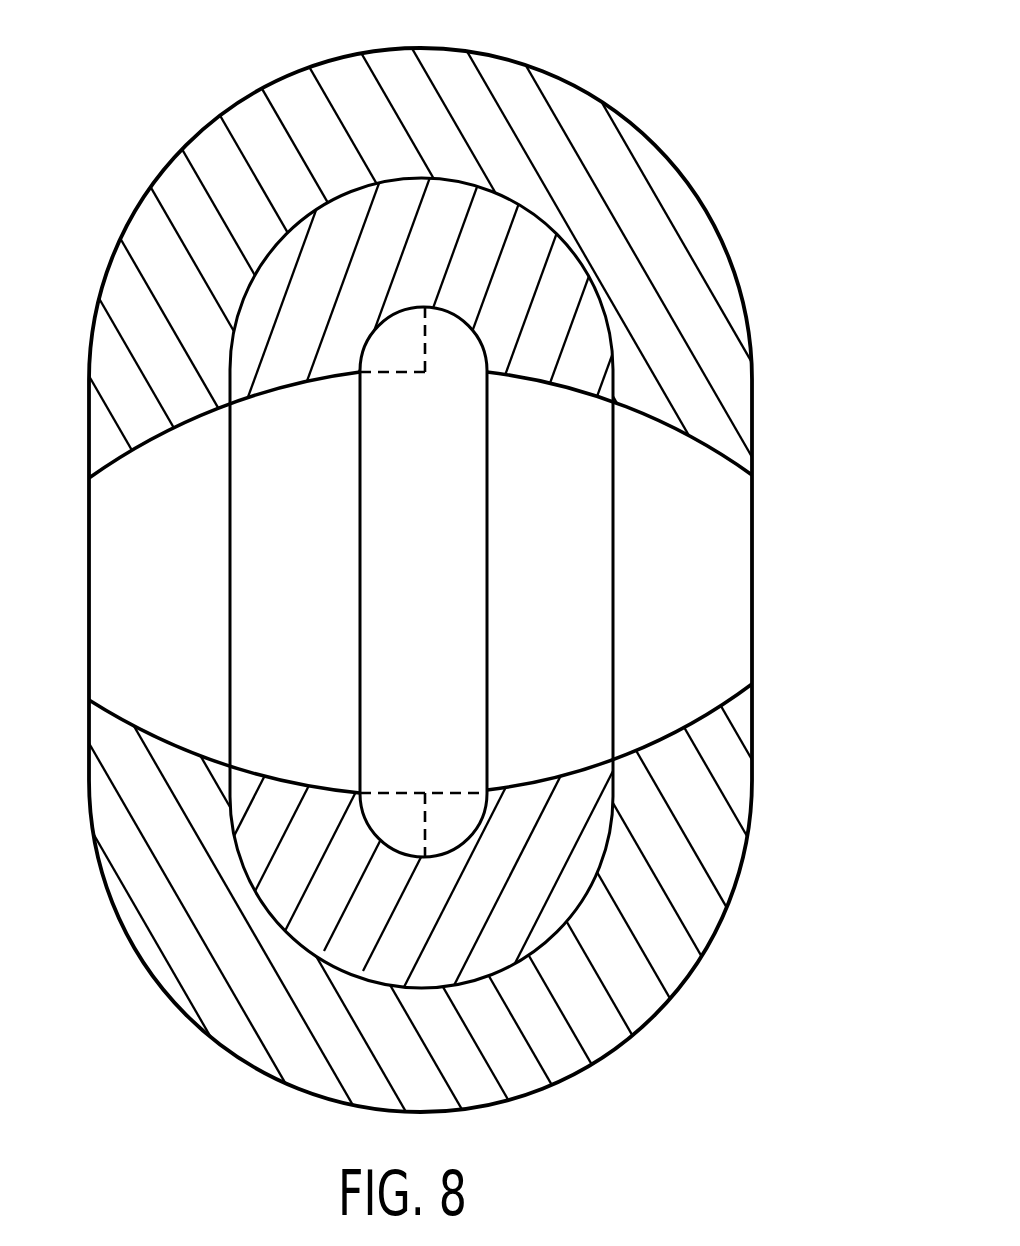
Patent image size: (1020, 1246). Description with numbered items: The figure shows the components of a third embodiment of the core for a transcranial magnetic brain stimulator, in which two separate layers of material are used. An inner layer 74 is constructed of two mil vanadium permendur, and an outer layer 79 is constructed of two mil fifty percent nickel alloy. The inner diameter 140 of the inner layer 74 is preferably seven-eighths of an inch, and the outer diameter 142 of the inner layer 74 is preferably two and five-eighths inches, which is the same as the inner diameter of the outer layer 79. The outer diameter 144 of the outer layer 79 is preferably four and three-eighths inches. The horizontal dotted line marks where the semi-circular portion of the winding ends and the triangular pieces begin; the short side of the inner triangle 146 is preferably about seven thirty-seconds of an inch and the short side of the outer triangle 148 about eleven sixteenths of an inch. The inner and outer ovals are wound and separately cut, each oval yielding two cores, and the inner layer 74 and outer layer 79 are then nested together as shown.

The inner diameter 140 is at (444, 292).
The outer diameter 142 is at (553, 220).
The outer diameter 144 is at (712, 208).
The inner triangle 146 is at (634, 382).
The outer triangle 148 is at (760, 428).
The outer layer 79 is at (154, 462).
The inner layer 74 is at (312, 412).